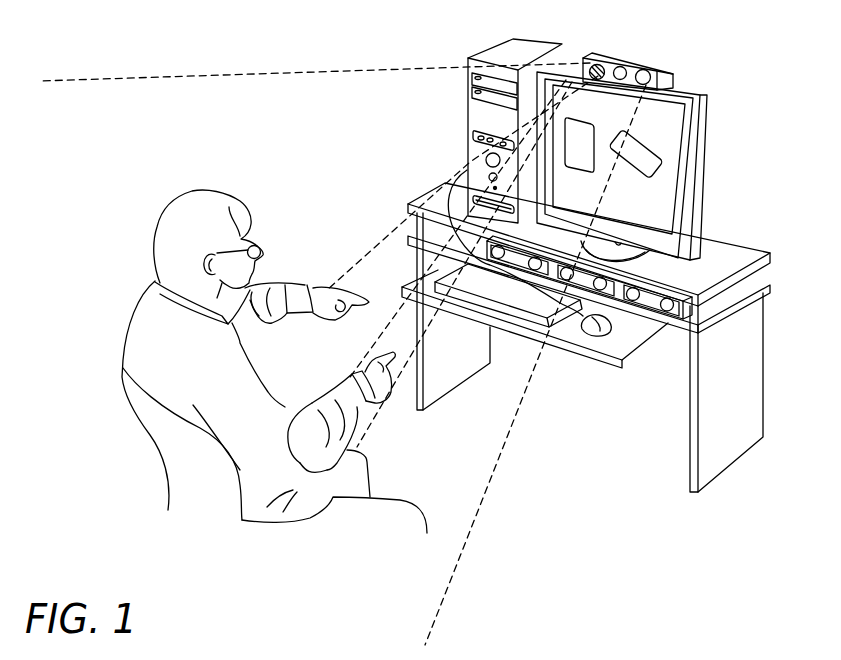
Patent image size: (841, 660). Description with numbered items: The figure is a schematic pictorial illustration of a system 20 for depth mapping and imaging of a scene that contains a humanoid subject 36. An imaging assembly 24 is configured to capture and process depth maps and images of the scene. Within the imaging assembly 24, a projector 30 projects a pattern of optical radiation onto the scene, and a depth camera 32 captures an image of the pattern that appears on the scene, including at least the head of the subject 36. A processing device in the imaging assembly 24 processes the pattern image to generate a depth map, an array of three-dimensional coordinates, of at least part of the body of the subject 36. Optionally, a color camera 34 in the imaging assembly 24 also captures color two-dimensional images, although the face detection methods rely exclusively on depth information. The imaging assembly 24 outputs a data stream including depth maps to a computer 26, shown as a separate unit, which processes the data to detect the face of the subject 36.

The system 20 is at (729, 83).
The imaging assembly 24 is at (674, 70).
The computer 26 is at (468, 108).
The projector 30 is at (624, 58).
The depth camera 32 is at (606, 55).
The color camera 34 is at (649, 67).
The humanoid subject 36 is at (160, 213).